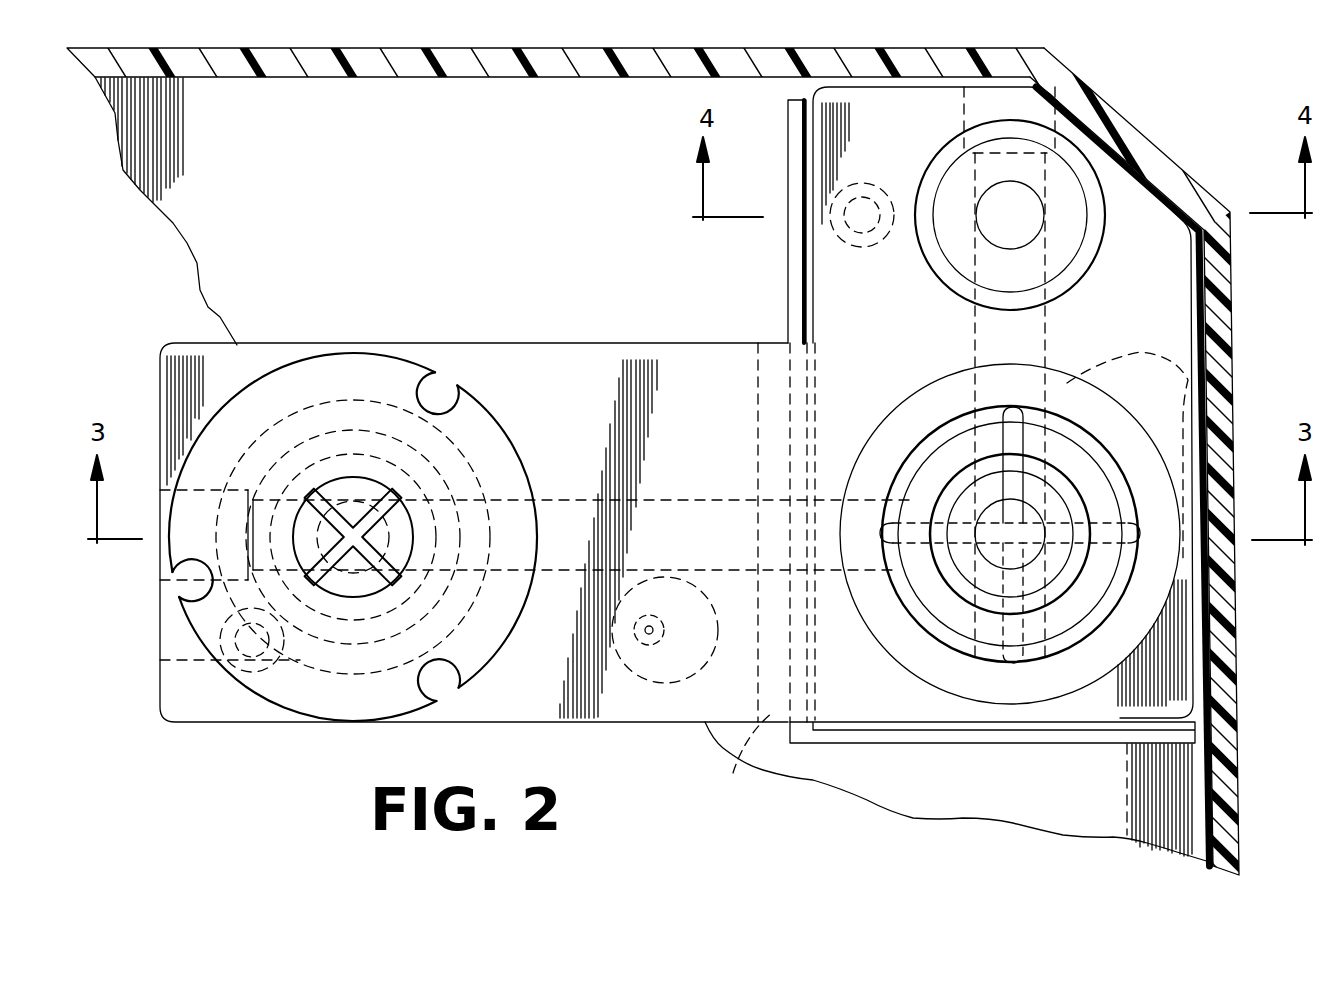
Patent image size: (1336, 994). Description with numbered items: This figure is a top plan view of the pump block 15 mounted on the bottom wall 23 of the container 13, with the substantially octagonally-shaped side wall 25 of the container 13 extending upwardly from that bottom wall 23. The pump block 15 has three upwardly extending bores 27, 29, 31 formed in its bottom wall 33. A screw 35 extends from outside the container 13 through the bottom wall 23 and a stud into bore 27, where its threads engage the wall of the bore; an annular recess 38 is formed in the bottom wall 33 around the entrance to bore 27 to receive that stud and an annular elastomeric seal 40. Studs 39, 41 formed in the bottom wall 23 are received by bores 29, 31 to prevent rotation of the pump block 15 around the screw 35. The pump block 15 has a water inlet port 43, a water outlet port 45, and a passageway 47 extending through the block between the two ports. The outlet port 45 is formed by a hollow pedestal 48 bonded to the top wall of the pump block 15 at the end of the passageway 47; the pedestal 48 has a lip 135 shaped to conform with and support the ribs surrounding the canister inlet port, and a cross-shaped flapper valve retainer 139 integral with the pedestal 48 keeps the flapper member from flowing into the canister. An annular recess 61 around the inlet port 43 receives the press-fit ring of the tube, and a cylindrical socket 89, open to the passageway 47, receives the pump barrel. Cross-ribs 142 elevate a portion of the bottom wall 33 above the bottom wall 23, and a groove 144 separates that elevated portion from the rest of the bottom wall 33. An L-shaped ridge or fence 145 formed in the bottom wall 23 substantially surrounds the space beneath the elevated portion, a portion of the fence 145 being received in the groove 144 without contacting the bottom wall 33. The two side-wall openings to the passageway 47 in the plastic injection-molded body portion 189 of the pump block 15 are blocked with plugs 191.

The container 13 is at (1232, 730).
The pump block 15 is at (678, 390).
The bottom wall 23 is at (383, 166).
The side wall 25 is at (530, 78).
The bore 27 is at (643, 650).
The bore 29 is at (168, 660).
The bore 31 is at (837, 200).
The bottom wall 33 is at (247, 702).
The screw 35 is at (657, 637).
The annular recess 38 is at (620, 663).
The stud 39 is at (245, 630).
The annular elastomeric seal 40 is at (630, 570).
The stud 41 is at (837, 222).
The water inlet port 43 is at (1030, 213).
The water outlet port 45 is at (358, 500).
The passageway 47 is at (677, 518).
The hollow pedestal 48 is at (303, 387).
The annular recess 61 is at (1073, 272).
The cylindrical socket 89 is at (1162, 560).
The lip 135 is at (473, 405).
The flapper valve retainer 139 is at (385, 556).
The cross-ribs 142 is at (1017, 437).
The groove 144 is at (741, 757).
The L-shaped ridge or fence 145 is at (792, 135).
The body portion 189 is at (583, 437).
The plugs 191 is at (1037, 107).